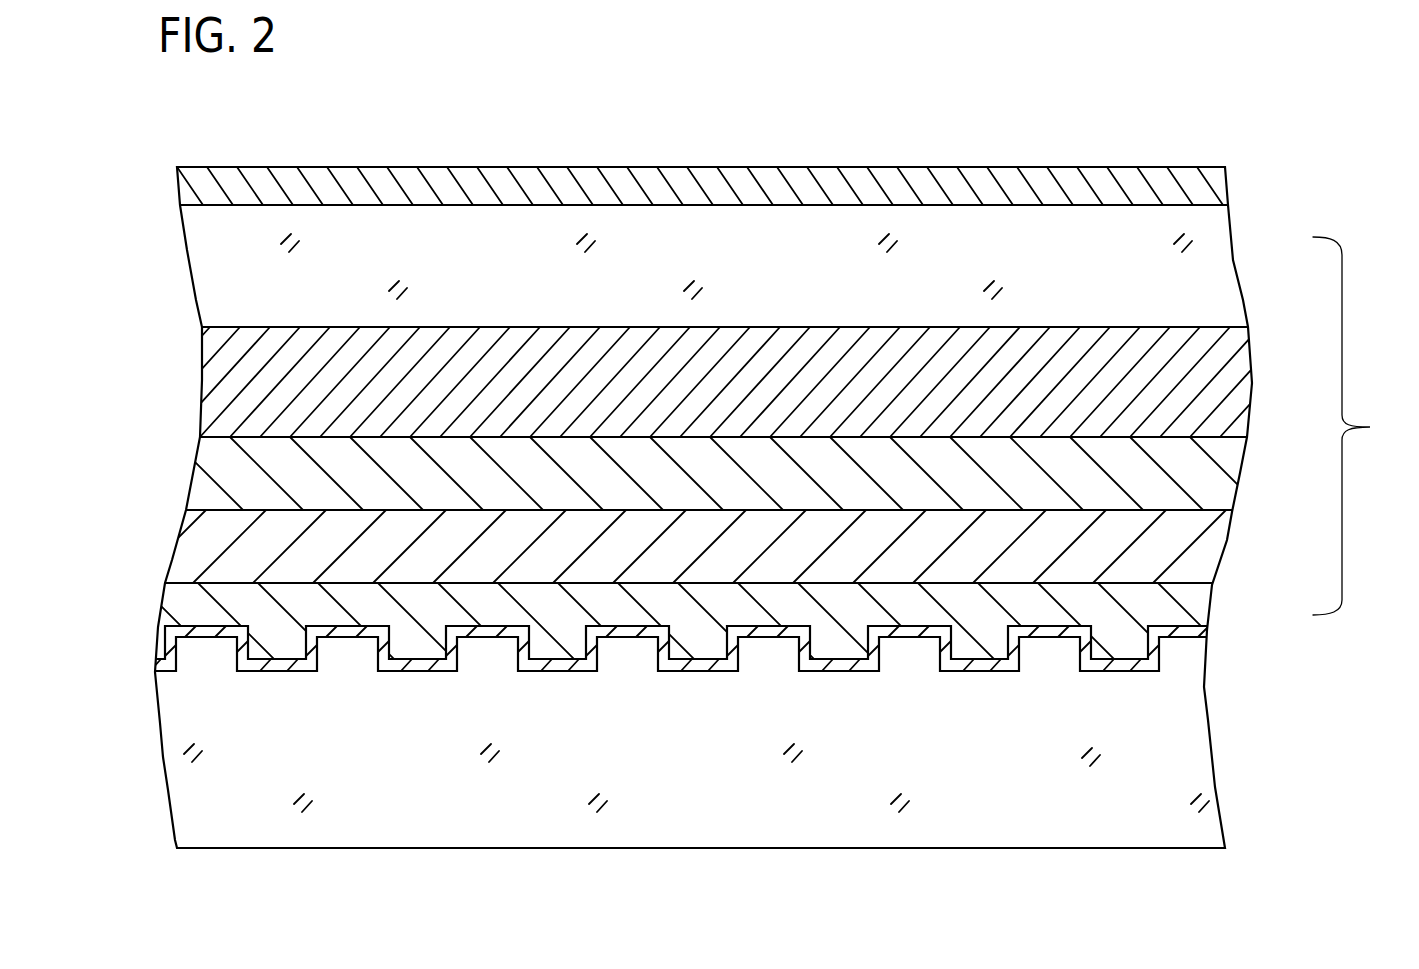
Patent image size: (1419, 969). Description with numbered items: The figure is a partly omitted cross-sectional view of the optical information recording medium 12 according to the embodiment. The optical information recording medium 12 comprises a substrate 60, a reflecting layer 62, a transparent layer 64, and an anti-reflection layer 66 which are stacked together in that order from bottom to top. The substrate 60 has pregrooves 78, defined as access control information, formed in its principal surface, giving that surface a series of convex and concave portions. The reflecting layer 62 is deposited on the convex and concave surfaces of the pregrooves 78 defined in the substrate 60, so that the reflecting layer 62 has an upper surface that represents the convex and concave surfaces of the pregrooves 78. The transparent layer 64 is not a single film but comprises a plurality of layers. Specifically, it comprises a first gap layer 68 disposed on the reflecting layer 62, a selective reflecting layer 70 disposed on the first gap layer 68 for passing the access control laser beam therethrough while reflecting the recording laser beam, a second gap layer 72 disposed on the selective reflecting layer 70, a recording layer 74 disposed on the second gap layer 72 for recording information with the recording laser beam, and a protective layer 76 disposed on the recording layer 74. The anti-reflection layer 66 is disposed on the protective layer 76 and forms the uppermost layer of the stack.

The optical information recording medium 12 is at (203, 128).
The substrate 60 is at (1198, 763).
The reflecting layer 62 is at (1195, 640).
The transparent layer 64 is at (1360, 426).
The anti-reflection layer 66 is at (1212, 196).
The first gap layer 68 is at (1202, 607).
The selective reflecting layer 70 is at (1217, 540).
The second gap layer 72 is at (1227, 473).
The recording layer 74 is at (1235, 376).
The protective layer 76 is at (1220, 265).
The pregrooves 78 is at (1043, 639).